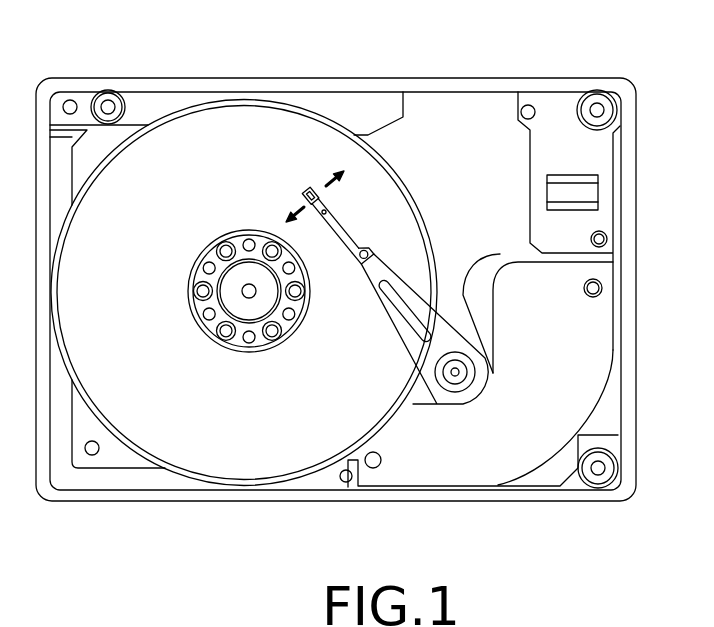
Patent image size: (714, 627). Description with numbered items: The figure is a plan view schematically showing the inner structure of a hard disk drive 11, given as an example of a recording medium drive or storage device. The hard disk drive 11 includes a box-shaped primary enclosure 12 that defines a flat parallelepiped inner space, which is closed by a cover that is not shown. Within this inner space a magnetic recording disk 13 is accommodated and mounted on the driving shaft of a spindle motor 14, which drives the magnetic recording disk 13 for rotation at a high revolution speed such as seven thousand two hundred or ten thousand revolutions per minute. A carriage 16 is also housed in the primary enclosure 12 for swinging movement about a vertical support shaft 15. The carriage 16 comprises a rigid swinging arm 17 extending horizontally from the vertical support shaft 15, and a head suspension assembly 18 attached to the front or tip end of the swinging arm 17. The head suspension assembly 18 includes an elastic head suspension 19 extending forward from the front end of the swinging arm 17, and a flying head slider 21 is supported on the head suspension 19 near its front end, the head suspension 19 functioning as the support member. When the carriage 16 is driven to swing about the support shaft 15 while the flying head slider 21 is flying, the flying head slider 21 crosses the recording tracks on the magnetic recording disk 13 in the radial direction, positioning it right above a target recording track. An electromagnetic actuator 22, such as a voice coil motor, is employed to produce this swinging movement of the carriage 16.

The hard disk drive 11 is at (368, 61).
The primary enclosure 12 is at (247, 502).
The magnetic recording disk 13 is at (415, 206).
The spindle motor 14 is at (217, 301).
The vertical support shaft 15 is at (462, 375).
The carriage 16 is at (394, 347).
The swinging arm 17 is at (395, 327).
The head suspension assembly 18 is at (304, 176).
The head suspension 19 is at (330, 210).
The flying head slider 21 is at (305, 202).
The electromagnetic actuator 22 is at (542, 480).